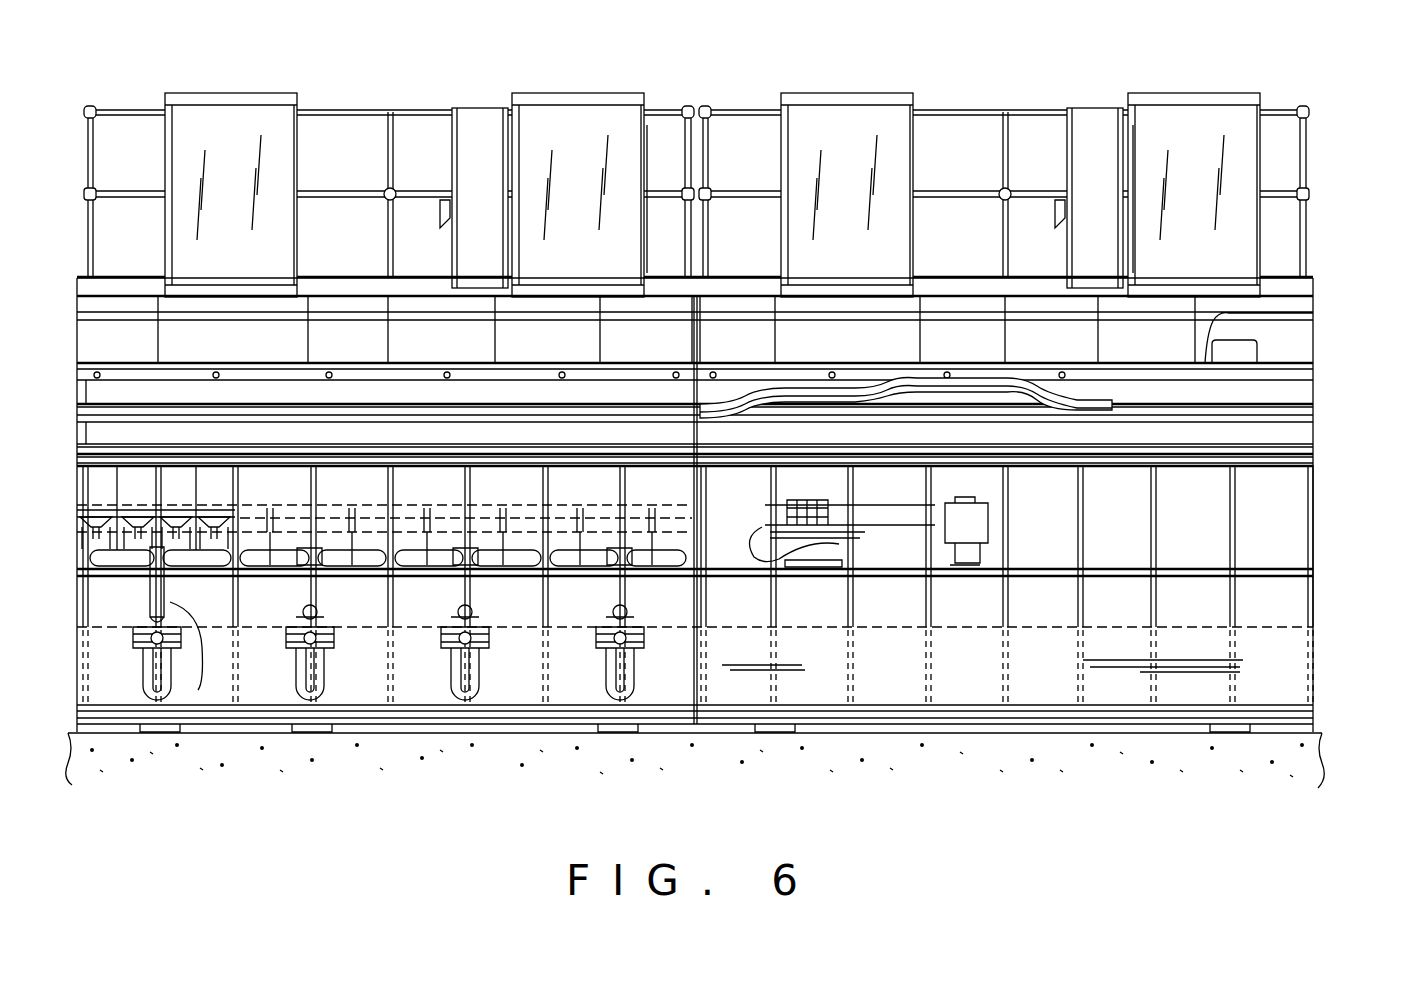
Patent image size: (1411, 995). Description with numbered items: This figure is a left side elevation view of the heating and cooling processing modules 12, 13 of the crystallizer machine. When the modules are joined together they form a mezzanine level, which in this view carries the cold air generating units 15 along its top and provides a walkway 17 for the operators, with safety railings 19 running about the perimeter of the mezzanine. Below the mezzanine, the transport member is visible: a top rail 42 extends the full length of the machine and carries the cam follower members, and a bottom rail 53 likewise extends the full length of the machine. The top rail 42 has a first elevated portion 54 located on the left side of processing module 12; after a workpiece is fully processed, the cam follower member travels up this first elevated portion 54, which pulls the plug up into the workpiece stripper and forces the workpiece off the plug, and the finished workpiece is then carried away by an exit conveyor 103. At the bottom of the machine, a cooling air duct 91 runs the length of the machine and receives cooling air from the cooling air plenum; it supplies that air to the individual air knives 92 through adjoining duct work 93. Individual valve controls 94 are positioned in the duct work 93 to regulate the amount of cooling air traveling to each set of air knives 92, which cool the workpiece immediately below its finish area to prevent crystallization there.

The heating and cooling processing module 12 is at (985, 735).
The heating and cooling processing module 13 is at (410, 736).
The cold air generating unit 15 is at (248, 117).
The walkway 17 is at (1282, 276).
The safety railing 19 is at (1282, 108).
The top rail 42 is at (1314, 416).
The bottom rail 53 is at (1314, 492).
The first elevated portion 54 is at (881, 394).
The cooling air duct 91 is at (663, 690).
The air knife 92 is at (137, 527).
The duct work 93 is at (200, 695).
The valve control 94 is at (291, 668).
The exit conveyor 103 is at (960, 538).